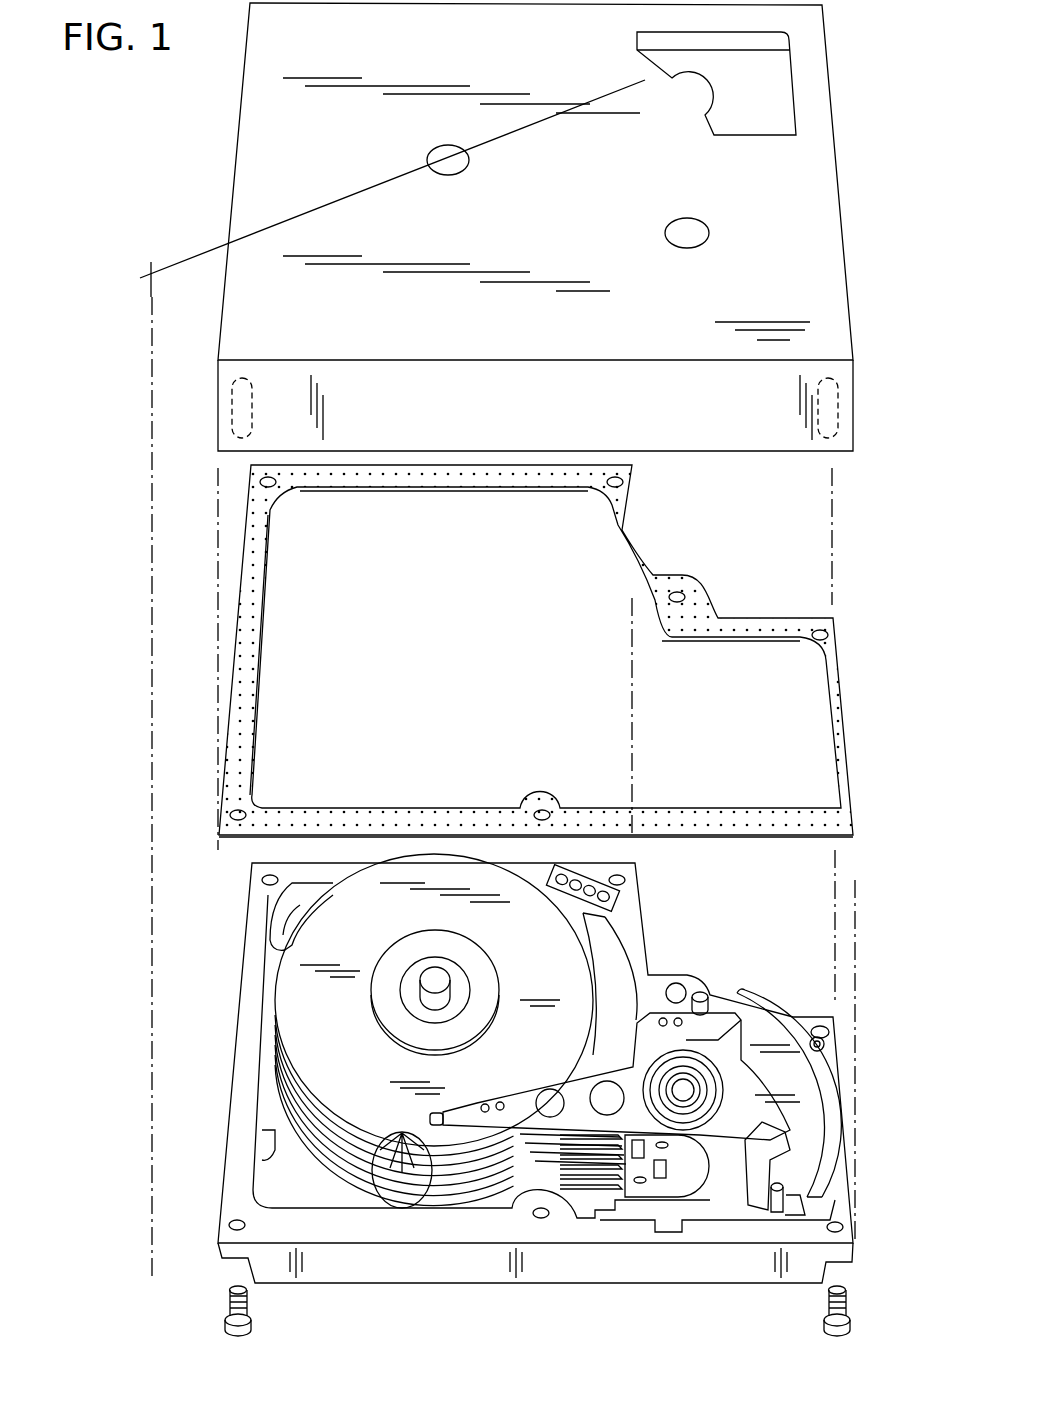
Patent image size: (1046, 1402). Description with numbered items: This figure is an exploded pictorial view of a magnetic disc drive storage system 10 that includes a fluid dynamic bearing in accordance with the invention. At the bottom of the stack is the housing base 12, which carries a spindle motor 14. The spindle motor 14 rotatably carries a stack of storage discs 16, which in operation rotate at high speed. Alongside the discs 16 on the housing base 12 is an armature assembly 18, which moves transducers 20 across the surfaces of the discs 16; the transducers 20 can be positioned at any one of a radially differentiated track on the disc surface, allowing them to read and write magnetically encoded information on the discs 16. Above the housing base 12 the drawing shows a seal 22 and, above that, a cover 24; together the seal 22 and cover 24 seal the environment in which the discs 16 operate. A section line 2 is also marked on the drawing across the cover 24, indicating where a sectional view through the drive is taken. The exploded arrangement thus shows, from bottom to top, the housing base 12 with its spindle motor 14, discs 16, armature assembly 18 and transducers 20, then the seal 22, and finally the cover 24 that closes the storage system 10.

The section line 2- 2 is at (628, 86).
The storage system 10 is at (845, 43).
The housing base 12 is at (855, 1236).
The spindle motor 14 is at (410, 1012).
The storage discs 16 is at (402, 1158).
The armature assembly 18 is at (583, 1205).
The transducers 20 is at (445, 1110).
The seal 22 is at (850, 796).
The cover 24 is at (843, 212).